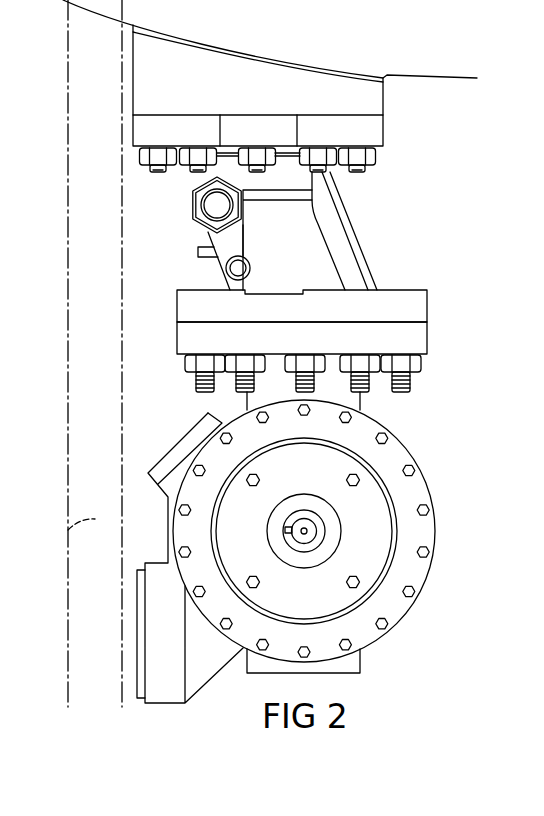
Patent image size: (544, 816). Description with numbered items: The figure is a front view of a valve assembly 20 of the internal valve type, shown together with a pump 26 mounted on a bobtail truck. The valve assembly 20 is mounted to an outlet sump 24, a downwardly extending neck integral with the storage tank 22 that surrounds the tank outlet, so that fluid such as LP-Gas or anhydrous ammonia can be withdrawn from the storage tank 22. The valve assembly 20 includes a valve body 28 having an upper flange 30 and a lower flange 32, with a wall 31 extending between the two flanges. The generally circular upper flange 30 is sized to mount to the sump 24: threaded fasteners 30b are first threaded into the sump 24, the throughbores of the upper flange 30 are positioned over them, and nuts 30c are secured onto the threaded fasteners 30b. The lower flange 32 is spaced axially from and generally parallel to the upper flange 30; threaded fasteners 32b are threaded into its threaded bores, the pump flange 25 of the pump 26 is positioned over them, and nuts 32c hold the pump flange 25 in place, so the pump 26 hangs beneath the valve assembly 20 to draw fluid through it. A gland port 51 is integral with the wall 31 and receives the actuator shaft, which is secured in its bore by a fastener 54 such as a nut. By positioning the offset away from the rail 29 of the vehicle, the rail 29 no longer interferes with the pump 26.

The valve assembly 20 is at (432, 214).
The storage tank 22 is at (437, 78).
The outlet sump 24 is at (145, 67).
The pump flange 25 is at (427, 342).
The pump 26 is at (412, 575).
The valve body 28 is at (190, 290).
The rail 29 is at (68, 530).
The upper flange 30 is at (140, 128).
The threaded fasteners 30b is at (190, 175).
The nuts 30c is at (318, 165).
The wall 31 is at (328, 272).
The lower flange 32 is at (432, 305).
The threaded fasteners 32b is at (198, 384).
The nuts 32c is at (190, 364).
The gland port 51 is at (191, 207).
The fastener 54 is at (206, 228).